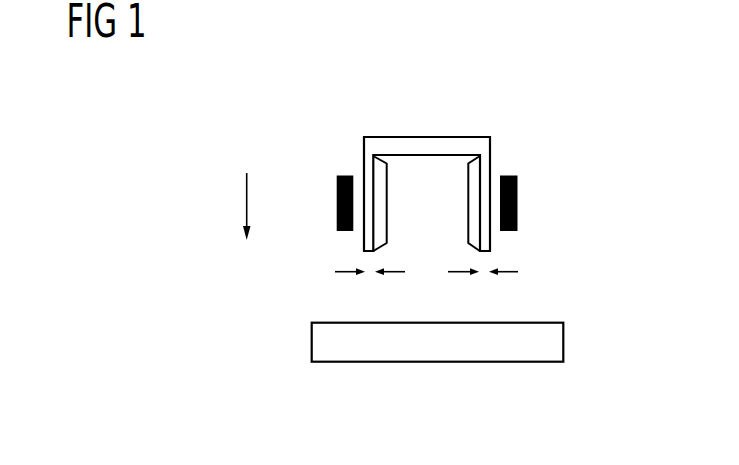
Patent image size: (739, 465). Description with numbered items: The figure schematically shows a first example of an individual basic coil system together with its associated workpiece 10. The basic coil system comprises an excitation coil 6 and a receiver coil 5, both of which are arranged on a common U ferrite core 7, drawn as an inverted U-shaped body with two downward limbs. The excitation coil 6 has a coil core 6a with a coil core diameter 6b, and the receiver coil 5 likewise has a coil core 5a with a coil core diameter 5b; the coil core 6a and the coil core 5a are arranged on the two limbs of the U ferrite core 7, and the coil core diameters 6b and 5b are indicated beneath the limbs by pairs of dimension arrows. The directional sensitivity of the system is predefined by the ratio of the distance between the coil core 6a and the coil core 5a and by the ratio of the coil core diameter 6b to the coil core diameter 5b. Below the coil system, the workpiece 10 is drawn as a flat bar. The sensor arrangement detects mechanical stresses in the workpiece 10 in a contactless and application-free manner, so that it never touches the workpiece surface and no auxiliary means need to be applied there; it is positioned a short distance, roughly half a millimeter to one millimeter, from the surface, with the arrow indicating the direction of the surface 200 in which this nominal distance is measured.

The U ferrite core 7 is at (433, 137).
The coil core 6a is at (387, 197).
The coil core 5a is at (468, 197).
The excitation coil 6 is at (337, 203).
The receiver coil 5 is at (518, 205).
The direction of the surface 200 is at (247, 198).
The coil core diameter 6b is at (370, 287).
The coil core diameter 5b is at (483, 287).
The workpiece 10 is at (312, 340).